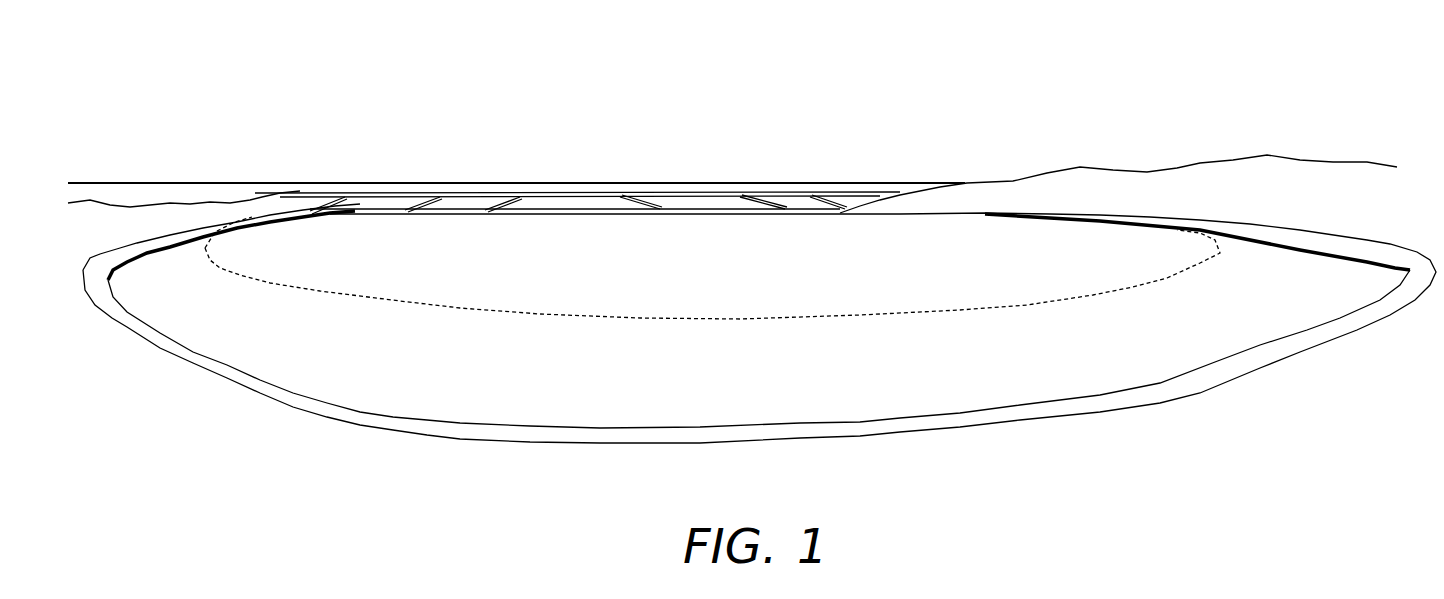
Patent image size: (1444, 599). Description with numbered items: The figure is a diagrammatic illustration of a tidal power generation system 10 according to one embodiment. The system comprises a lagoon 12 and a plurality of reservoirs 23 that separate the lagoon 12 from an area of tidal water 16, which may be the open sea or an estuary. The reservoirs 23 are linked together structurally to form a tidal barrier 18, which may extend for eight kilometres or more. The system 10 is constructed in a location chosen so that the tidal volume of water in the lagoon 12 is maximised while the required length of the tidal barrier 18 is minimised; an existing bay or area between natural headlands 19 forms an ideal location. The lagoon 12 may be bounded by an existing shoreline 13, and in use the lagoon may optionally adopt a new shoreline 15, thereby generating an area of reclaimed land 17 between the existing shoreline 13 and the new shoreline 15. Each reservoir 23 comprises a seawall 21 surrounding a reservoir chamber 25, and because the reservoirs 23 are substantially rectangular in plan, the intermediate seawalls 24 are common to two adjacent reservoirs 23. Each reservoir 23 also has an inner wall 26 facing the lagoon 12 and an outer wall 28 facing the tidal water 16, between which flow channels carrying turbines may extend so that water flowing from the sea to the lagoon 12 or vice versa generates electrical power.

The tidal power generation system 10 is at (905, 94).
The lagoon 12 is at (638, 282).
The existing shoreline 13 is at (1215, 368).
The new shoreline 15 is at (738, 322).
The area of tidal water 16 is at (272, 195).
The reclaimed land 17 is at (1022, 367).
The tidal barrier 18 is at (577, 192).
The natural headlands 19 is at (158, 203).
The seawall 21 is at (528, 217).
The reservoir 23 is at (346, 205).
The intermediate seawall 24 is at (424, 200).
The reservoir chamber 25 is at (587, 202).
The inner wall 26 is at (728, 188).
The outer wall 28 is at (672, 188).